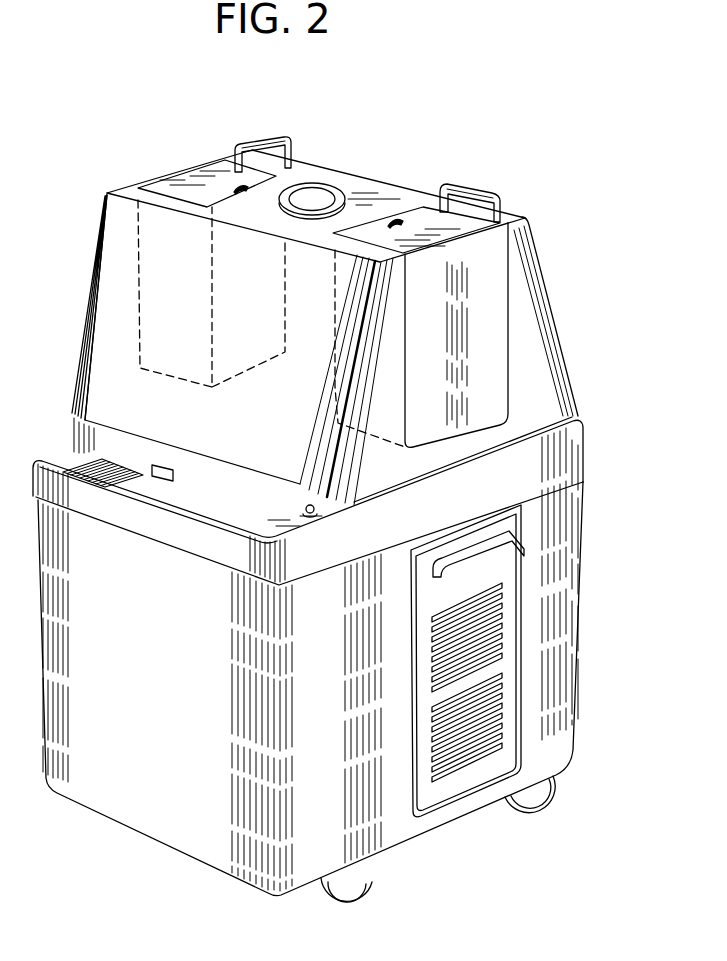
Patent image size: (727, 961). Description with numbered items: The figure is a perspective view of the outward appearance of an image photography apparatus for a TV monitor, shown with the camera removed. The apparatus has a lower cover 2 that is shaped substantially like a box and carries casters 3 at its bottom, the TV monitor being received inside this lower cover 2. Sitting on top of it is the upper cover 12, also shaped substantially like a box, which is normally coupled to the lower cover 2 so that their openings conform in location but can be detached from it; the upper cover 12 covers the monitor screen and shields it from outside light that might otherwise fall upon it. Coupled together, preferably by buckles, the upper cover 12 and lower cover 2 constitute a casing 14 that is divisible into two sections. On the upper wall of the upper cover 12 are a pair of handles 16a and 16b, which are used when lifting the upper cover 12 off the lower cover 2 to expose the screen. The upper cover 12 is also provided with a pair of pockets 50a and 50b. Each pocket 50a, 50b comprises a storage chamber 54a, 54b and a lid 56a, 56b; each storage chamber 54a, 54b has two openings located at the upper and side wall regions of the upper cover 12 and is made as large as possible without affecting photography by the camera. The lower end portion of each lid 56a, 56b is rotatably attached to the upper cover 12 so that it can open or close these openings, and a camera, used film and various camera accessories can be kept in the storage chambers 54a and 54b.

The lower cover 2 is at (580, 609).
The casters 3 is at (358, 899).
The upper cover 12 is at (543, 260).
The casing 14 is at (593, 446).
The handle 16a is at (283, 147).
The handle 16b is at (472, 187).
The pocket 50a is at (195, 158).
The pocket 50b is at (506, 326).
The storage chamber 54a is at (137, 270).
The storage chamber 54b is at (333, 388).
The lid 56a is at (163, 181).
The lid 56b is at (509, 223).